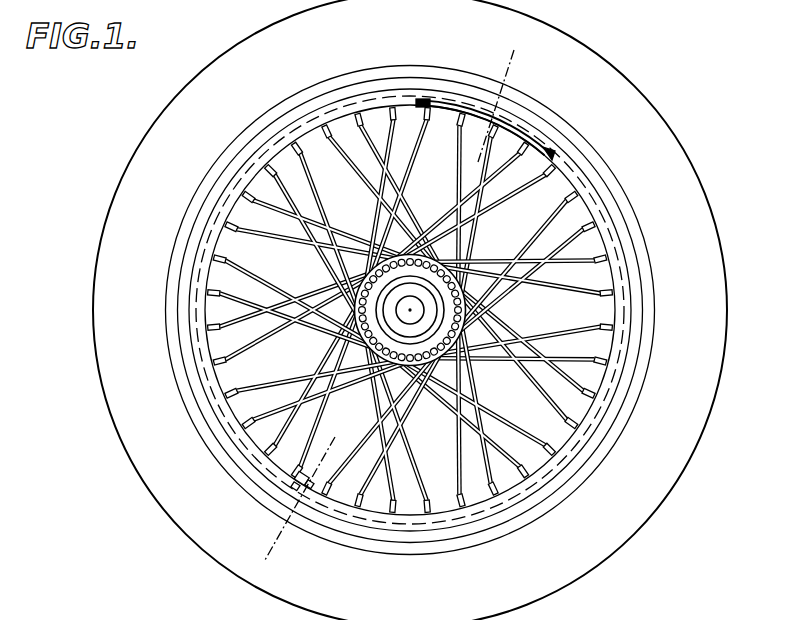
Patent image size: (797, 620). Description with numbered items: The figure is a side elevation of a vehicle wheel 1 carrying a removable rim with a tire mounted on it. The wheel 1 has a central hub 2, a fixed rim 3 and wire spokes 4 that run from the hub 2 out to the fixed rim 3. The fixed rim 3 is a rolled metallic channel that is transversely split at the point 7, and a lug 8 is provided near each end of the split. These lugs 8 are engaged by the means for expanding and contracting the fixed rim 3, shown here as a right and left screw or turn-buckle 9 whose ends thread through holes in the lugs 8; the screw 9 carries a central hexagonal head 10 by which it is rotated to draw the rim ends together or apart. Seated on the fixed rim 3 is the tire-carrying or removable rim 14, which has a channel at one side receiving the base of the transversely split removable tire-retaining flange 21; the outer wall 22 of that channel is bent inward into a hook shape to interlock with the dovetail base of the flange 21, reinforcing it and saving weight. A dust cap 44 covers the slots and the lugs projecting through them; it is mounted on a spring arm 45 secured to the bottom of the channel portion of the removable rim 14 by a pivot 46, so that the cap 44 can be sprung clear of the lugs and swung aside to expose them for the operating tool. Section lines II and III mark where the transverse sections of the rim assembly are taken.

The vehicle wheel 1 is at (410, 310).
The hub 2 is at (410, 310).
The fixed rim 3 is at (442, 513).
The spokes 4 is at (405, 441).
The split point 7 is at (298, 489).
The lug 8 is at (302, 463).
The right and left screw or turn-buckle 9 is at (300, 481).
The central hexagonal head 10 is at (308, 472).
The tire-carrying or removable rim 14 is at (222, 168).
The transversely split removable tire-retaining flange 21 is at (190, 408).
The outer wall of the channel 22 is at (240, 452).
The dust cap 44 is at (550, 160).
The spring arm 45 is at (458, 110).
The pivot 46 is at (424, 101).
The section line II— II is at (303, 494).
The section line III— III is at (487, 107).